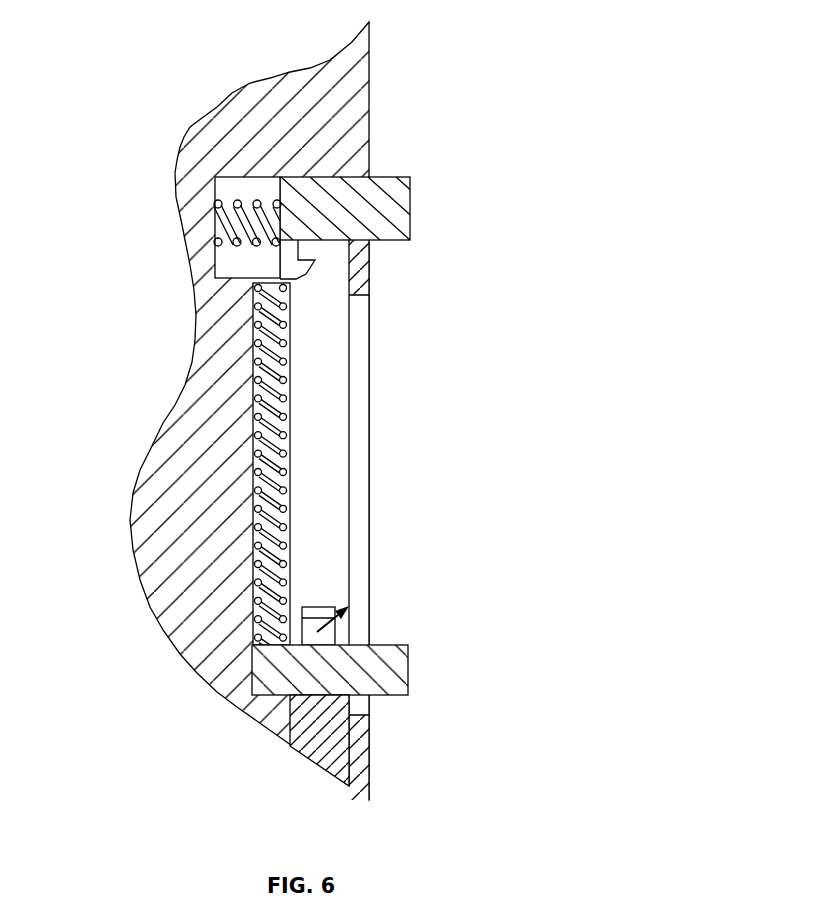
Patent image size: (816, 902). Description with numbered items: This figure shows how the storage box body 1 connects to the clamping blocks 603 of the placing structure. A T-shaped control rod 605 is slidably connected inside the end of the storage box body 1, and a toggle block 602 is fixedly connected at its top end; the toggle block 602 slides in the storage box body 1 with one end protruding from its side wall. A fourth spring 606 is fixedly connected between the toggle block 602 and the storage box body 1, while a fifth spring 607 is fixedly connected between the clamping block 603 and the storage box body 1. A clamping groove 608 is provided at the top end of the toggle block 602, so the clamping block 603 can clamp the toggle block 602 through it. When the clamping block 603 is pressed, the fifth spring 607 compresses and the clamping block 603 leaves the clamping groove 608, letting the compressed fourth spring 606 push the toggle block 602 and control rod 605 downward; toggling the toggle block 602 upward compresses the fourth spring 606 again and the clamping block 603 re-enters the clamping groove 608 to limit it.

The storage box body 1 is at (215, 397).
The toggle block 602 is at (385, 675).
The clamping block 603 is at (383, 205).
The control rod 605 is at (327, 738).
The fourth spring 606 is at (295, 474).
The fifth spring 607 is at (235, 228).
The clamping groove 608 is at (352, 606).